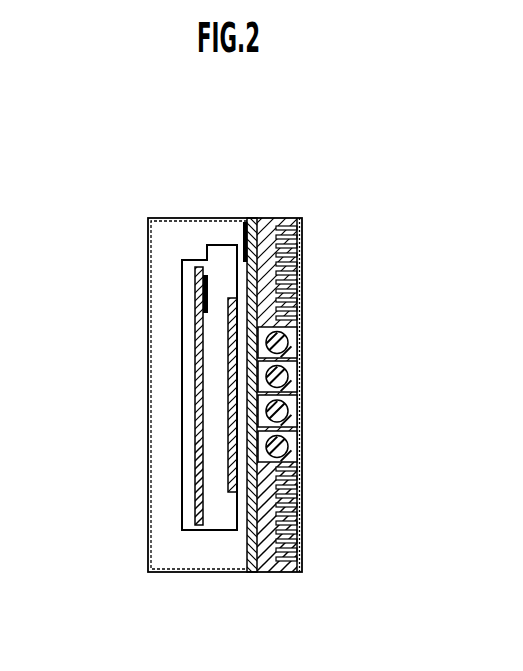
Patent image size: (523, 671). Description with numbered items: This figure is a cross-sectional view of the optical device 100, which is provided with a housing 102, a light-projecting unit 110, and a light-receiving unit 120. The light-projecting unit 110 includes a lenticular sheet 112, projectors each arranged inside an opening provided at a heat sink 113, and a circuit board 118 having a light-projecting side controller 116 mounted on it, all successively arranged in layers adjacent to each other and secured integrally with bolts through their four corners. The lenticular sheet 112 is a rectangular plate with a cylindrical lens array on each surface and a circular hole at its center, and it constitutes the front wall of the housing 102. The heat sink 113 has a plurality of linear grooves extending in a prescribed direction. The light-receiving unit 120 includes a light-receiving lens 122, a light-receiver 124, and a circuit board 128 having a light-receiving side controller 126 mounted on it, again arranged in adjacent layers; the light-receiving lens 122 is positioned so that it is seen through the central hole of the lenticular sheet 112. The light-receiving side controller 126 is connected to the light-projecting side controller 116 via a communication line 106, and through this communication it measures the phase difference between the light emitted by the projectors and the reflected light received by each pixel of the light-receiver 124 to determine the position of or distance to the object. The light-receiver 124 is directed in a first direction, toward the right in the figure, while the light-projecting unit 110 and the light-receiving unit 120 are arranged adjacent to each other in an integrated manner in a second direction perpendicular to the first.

The optical device 100 is at (135, 173).
The housing 102 is at (147, 343).
The communication line 106 is at (207, 258).
The light-projecting unit 110 is at (383, 170).
The lenticular sheet 112 is at (305, 218).
The heat sink 113 is at (285, 575).
The light-projecting side controller 116 is at (243, 232).
The circuit board 118 is at (255, 212).
The light-receiving unit 120 is at (192, 307).
The light-receiving lens 122 is at (315, 289).
The light-receiver 124 is at (226, 394).
The light-receiving side controller 126 is at (208, 273).
The circuit board 128 is at (193, 487).